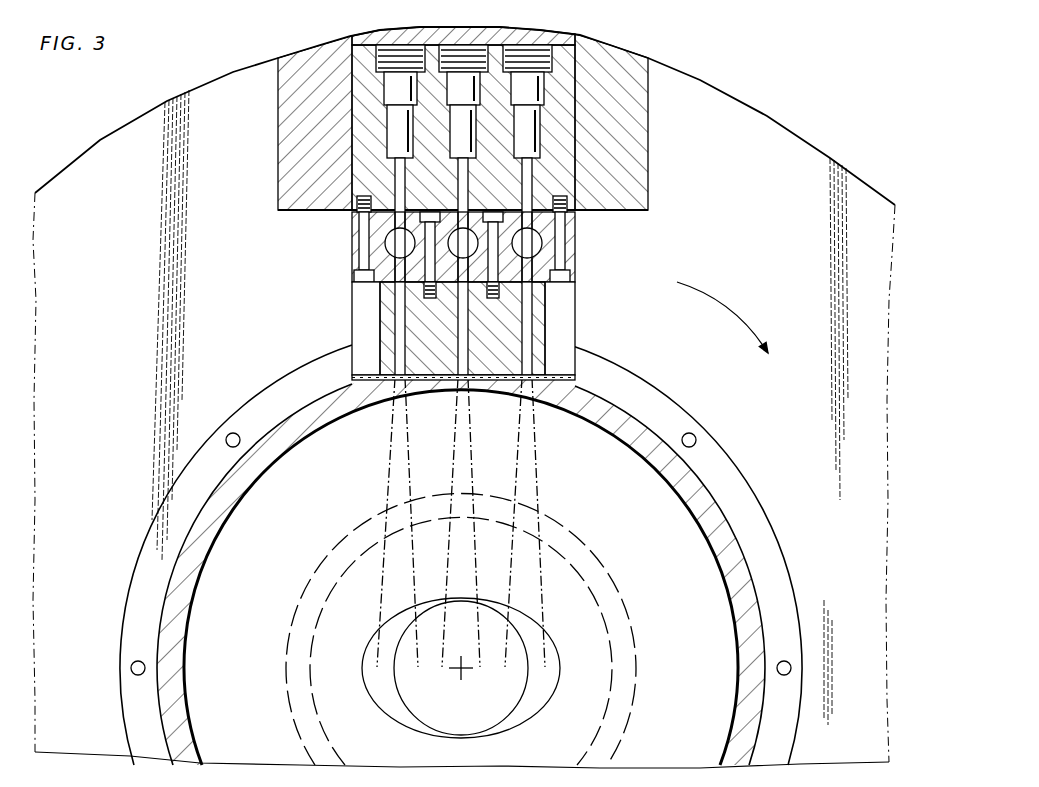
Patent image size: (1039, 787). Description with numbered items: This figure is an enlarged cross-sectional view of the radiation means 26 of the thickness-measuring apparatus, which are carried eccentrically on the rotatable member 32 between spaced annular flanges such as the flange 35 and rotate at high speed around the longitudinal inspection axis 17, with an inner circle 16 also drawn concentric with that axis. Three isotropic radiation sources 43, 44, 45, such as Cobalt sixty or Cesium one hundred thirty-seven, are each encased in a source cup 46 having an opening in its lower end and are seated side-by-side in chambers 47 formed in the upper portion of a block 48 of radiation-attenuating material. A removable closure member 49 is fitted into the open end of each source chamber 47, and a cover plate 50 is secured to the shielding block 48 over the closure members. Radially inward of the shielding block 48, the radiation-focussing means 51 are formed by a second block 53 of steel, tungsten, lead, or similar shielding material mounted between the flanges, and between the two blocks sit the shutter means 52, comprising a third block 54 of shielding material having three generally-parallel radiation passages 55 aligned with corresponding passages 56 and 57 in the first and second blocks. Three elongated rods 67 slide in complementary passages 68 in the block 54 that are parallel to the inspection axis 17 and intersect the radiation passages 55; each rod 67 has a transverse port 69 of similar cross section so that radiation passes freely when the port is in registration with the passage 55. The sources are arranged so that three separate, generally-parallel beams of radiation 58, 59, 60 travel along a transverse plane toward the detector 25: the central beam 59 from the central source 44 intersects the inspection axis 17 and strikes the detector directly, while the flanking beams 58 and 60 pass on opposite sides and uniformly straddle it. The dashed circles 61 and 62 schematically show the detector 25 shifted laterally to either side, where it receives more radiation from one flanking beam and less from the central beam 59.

The combustion chamber circle 16 is at (607, 572).
The longitudinal inspection axis 17 is at (463, 672).
The detector 25 is at (392, 710).
The radiation means 26 is at (673, 233).
The rotatable member 32 is at (648, 452).
The annular flange 35 is at (101, 335).
The radiation source 43 is at (397, 138).
The central radioactive source 44 is at (452, 147).
The radiation source 45 is at (640, 160).
The source cup 46 is at (393, 115).
The source chamber 47 is at (535, 122).
The shielding block 48 is at (530, 177).
The closure member 49 is at (532, 90).
The cover plate 50 is at (560, 37).
The radiation-focussing means 51 is at (324, 322).
The shutter means 52 is at (316, 228).
The focussing block 53 is at (481, 346).
The shutter block 54 is at (576, 272).
The radiation passage 55 is at (546, 302).
The radiation passage 56 is at (557, 178).
The radiation passage 57 is at (576, 367).
The radiation beam 58 is at (392, 455).
The central radiation beam 59 is at (455, 440).
The radiation beam 60 is at (533, 450).
The dashed circle 61 is at (362, 668).
The dashed circle 62 is at (560, 674).
The elongated rod 67 is at (445, 292).
The complementary passage 68 is at (387, 250).
The transverse port 69 is at (540, 247).